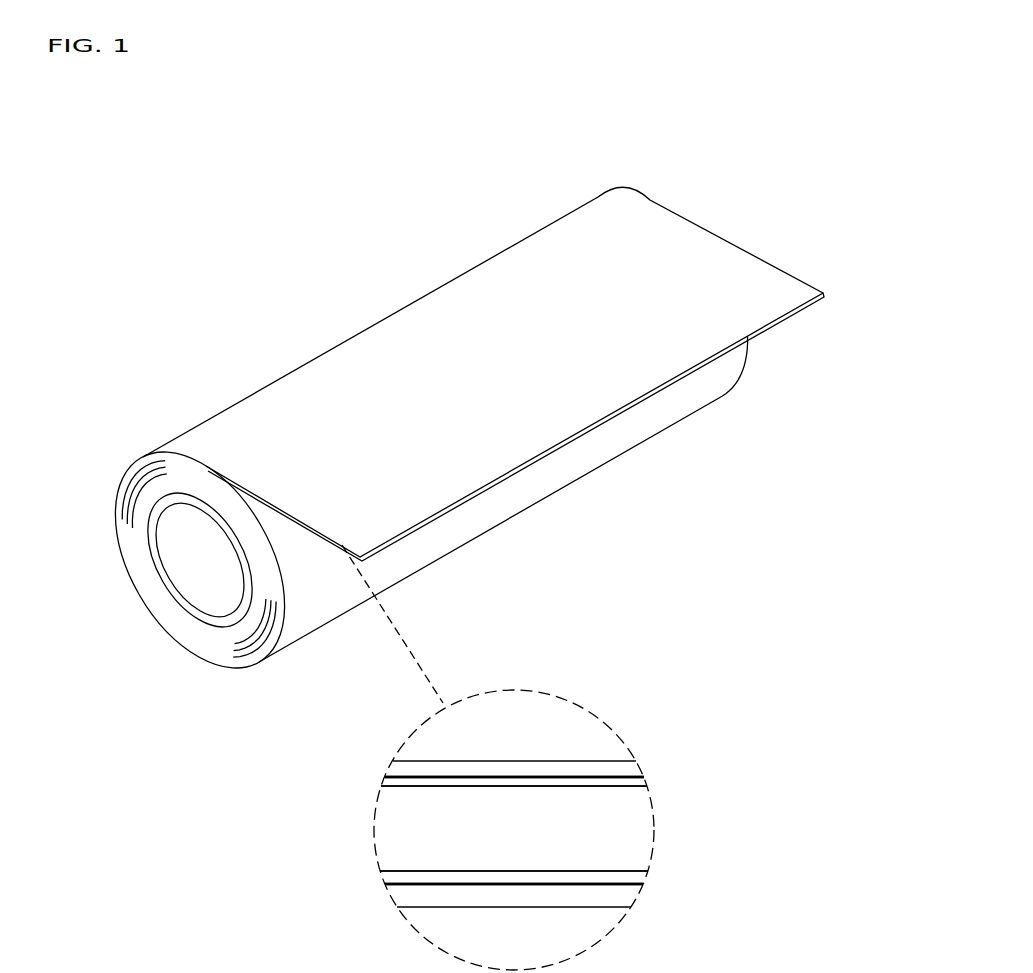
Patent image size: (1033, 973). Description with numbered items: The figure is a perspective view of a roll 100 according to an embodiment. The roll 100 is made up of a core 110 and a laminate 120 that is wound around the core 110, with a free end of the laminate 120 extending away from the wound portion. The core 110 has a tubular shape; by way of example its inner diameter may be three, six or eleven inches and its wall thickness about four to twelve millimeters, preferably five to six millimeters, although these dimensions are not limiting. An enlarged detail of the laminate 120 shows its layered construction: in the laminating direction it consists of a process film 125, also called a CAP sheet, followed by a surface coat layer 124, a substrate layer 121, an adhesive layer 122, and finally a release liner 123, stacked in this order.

The roll 100 is at (183, 316).
The core 110 is at (187, 613).
The laminate 120 is at (709, 258).
The substrate layer 121 is at (637, 833).
The adhesive layer 122 is at (637, 878).
The release liner 123 is at (630, 895).
The surface coat layer 124 is at (637, 782).
The process film 125 is at (628, 768).